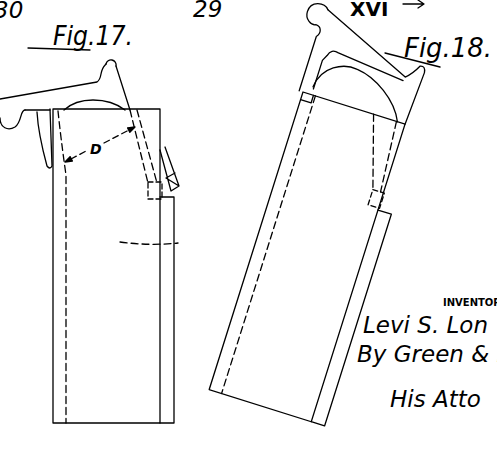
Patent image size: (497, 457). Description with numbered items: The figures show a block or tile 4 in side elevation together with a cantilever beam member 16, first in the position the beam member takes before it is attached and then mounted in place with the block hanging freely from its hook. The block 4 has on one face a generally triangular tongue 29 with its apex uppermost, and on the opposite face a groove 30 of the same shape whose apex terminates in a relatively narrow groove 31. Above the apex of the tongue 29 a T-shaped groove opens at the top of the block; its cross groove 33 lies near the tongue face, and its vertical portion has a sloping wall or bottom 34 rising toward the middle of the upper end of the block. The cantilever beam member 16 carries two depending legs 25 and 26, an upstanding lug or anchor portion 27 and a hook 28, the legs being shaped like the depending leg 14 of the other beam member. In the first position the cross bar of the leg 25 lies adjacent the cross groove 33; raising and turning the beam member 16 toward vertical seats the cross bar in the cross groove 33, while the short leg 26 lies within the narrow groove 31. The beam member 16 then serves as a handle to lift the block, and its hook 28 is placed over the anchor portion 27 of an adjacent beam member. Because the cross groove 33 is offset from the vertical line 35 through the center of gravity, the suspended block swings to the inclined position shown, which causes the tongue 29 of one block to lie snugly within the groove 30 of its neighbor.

In FIG. 18, the block or tile 4 is at (311, 289).
In FIG. 18, the depending leg 14 is at (392, 165).
In FIG. 17, the cantilever beam member 16 is at (70, 85).
In FIG. 17, the depending leg 25 is at (167, 157).
In FIG. 18, the depending leg 26 is at (307, 90).
In FIG. 17, the upstanding lug or anchor portion 27 is at (117, 65).
In FIG. 18, the hook 28 is at (308, 24).
In FIG. 17, the tongue 29 is at (172, 284).
In FIG. 18, the tongue 29 is at (372, 267).
In FIG. 17, the groove 30 is at (62, 288).
In FIG. 17, the narrow groove 31 is at (66, 168).
In FIG. 17, the cross groove 33 is at (177, 195).
In FIG. 17, the sloping wall or bottom 34 is at (152, 138).
In FIG. 17, the vertical line 35 is at (164, 243).